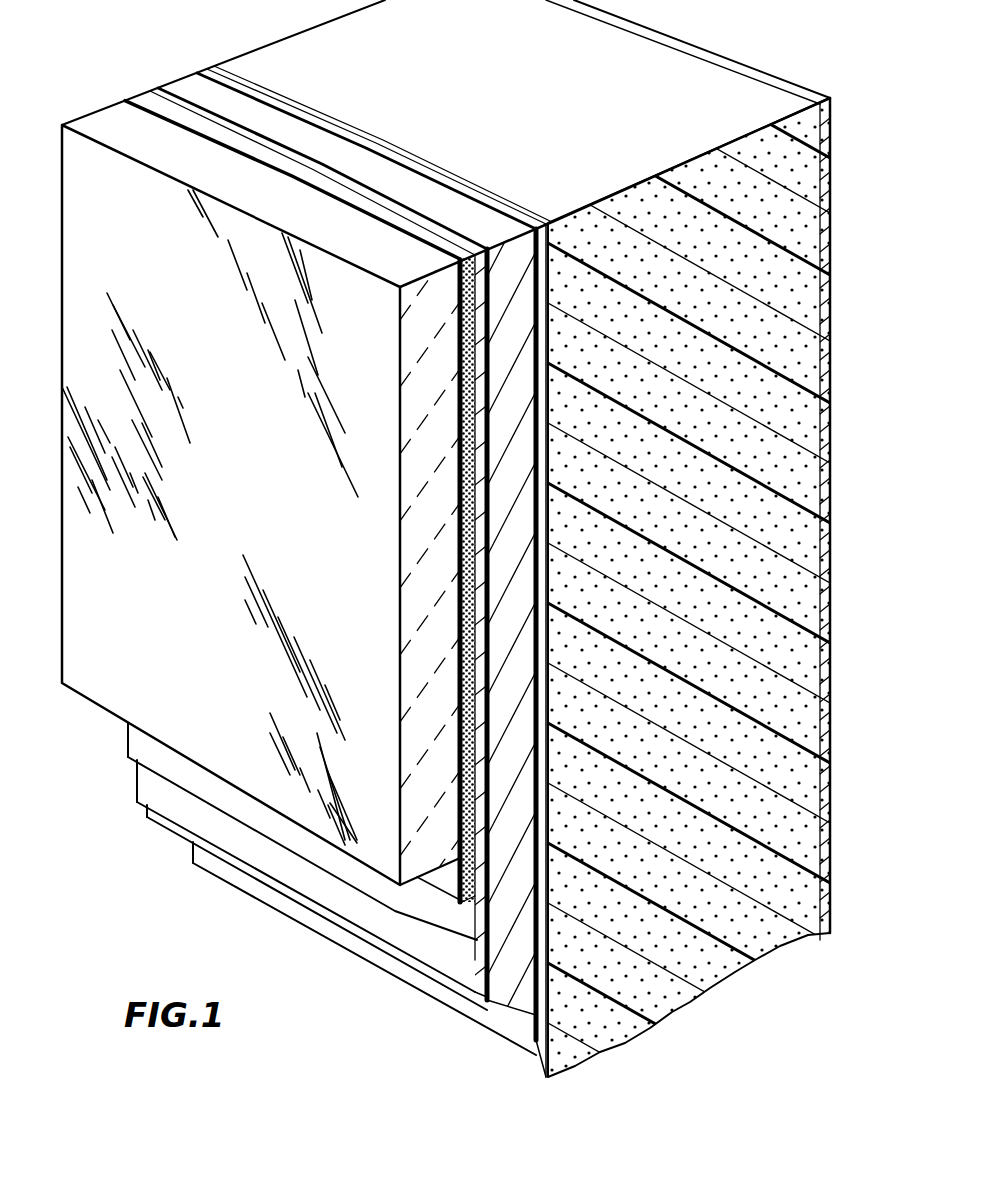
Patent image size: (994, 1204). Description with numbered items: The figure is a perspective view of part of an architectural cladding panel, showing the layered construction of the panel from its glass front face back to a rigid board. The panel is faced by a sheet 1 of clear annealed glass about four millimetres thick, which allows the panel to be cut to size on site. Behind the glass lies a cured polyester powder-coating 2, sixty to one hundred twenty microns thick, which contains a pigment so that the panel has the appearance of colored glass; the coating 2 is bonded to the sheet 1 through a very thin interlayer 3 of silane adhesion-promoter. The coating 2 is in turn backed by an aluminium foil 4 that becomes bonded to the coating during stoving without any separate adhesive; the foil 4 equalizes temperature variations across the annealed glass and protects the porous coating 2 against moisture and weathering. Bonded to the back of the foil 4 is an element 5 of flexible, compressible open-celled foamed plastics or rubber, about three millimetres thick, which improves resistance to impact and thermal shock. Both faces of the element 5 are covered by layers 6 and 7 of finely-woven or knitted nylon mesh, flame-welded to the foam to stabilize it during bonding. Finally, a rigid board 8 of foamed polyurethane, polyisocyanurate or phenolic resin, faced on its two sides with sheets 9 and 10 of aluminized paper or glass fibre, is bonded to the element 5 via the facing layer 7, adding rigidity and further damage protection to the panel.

The sheet of clear annealed glass 1 is at (124, 684).
The cured polyester powder-coating 2 is at (461, 821).
The interlayer of silane adhesion-promoter 3 is at (462, 846).
The aluminium foil 4 is at (478, 938).
The element of flexible compressible open-celled foamed material 5 is at (519, 1010).
The nylon mesh layer 6 is at (487, 982).
The nylon mesh facing layer 7 is at (533, 1008).
The rigid board 8 is at (767, 291).
The facing sheet of aluminized paper or glass fibre 9 is at (551, 246).
The facing sheet of aluminized paper or glass fibre 10 is at (828, 468).